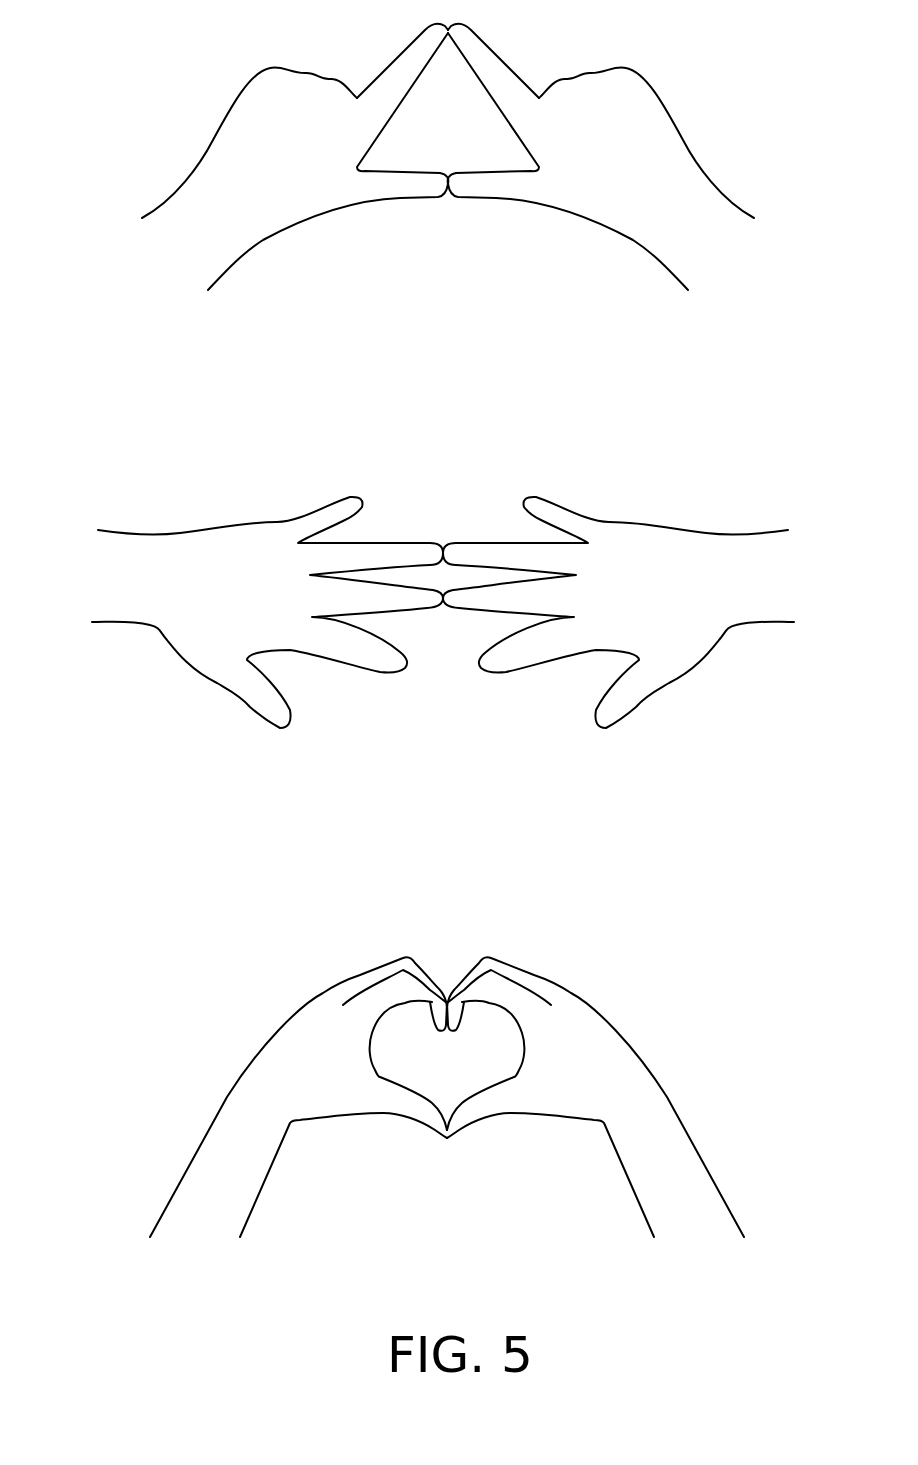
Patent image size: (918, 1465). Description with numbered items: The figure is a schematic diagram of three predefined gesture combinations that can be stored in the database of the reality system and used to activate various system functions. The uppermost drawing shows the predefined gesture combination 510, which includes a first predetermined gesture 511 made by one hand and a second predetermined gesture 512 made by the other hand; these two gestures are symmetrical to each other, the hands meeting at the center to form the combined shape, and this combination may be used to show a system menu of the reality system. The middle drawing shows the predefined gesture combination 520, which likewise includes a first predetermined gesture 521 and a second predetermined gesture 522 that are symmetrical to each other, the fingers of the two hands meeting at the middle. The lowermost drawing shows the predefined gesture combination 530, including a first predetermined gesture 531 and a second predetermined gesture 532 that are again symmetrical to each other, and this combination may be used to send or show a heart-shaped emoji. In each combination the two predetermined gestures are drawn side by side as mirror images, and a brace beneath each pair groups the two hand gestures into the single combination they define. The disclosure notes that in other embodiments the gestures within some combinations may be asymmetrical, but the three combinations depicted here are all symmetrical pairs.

The predefined gesture combination 510 is at (448, 196).
The first predetermined gesture 511 is at (313, 198).
The second predetermined gesture 512 is at (601, 172).
The predefined gesture combination 520 is at (443, 665).
The first predetermined gesture 521 is at (365, 662).
The second predetermined gesture 522 is at (618, 641).
The predefined gesture combination 530 is at (447, 1114).
The first predetermined gesture 531 is at (353, 1102).
The second predetermined gesture 532 is at (595, 1097).